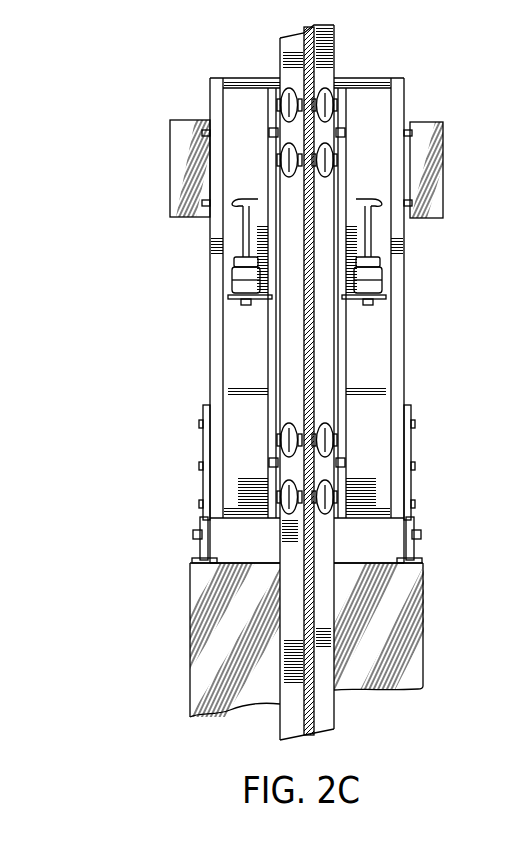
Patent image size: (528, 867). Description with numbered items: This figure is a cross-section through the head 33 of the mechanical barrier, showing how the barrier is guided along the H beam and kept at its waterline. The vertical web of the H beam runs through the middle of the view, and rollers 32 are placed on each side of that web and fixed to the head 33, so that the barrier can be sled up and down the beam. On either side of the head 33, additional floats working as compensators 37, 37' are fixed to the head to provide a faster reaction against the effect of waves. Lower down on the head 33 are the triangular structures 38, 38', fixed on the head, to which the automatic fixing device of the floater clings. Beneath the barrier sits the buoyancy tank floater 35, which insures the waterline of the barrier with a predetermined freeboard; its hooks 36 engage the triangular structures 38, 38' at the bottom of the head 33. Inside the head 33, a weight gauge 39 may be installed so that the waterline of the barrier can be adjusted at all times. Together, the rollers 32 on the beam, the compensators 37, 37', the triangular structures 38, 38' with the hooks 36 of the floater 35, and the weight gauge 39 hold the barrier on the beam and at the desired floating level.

The rollers 32 is at (322, 92).
The head 33 is at (395, 322).
The buoyancy tank floater 35 is at (390, 607).
The hooks 36 is at (420, 547).
The compensators 37 is at (464, 170).
The compensators 37' is at (155, 168).
The triangular structure 38 is at (462, 462).
The triangular structure 38' is at (155, 462).
The weight gauge 39 is at (243, 282).